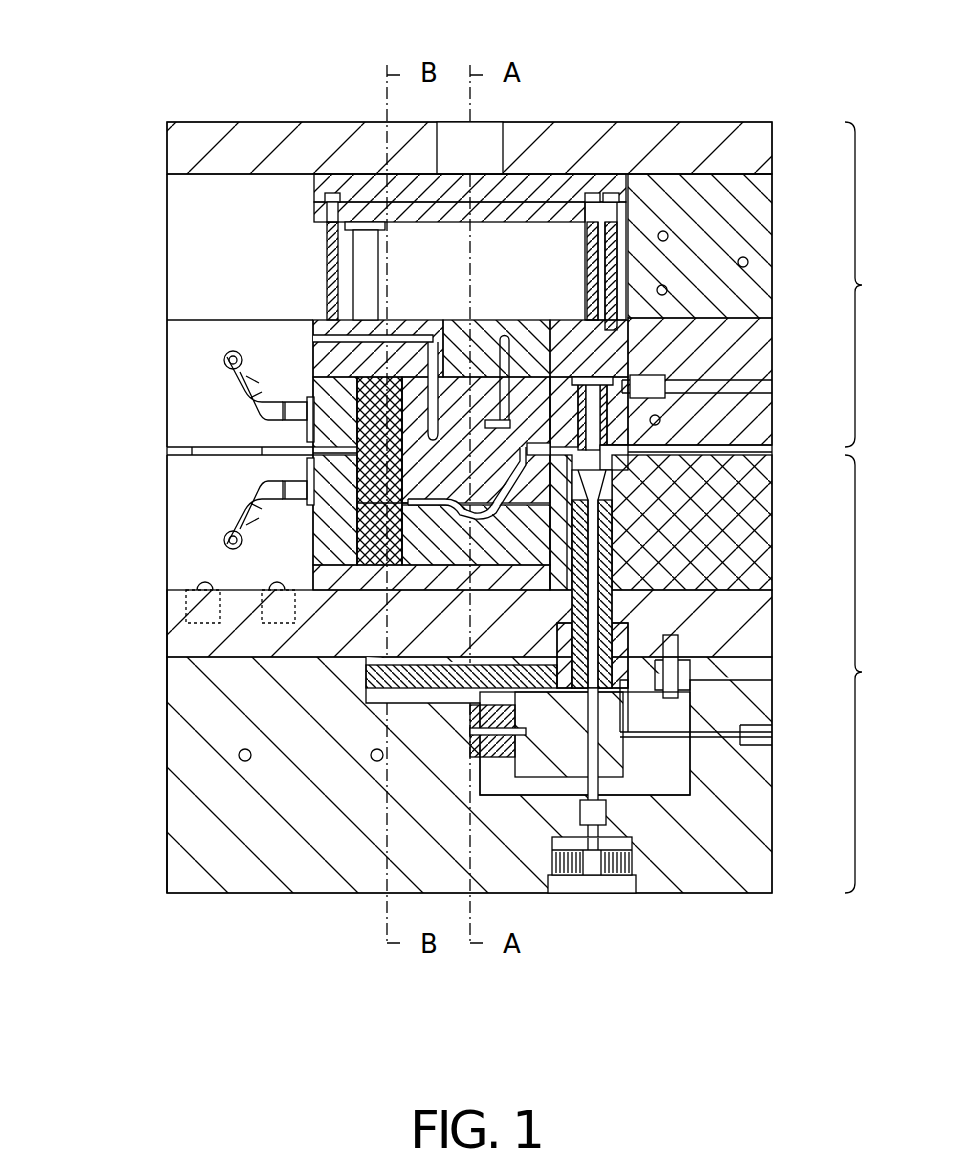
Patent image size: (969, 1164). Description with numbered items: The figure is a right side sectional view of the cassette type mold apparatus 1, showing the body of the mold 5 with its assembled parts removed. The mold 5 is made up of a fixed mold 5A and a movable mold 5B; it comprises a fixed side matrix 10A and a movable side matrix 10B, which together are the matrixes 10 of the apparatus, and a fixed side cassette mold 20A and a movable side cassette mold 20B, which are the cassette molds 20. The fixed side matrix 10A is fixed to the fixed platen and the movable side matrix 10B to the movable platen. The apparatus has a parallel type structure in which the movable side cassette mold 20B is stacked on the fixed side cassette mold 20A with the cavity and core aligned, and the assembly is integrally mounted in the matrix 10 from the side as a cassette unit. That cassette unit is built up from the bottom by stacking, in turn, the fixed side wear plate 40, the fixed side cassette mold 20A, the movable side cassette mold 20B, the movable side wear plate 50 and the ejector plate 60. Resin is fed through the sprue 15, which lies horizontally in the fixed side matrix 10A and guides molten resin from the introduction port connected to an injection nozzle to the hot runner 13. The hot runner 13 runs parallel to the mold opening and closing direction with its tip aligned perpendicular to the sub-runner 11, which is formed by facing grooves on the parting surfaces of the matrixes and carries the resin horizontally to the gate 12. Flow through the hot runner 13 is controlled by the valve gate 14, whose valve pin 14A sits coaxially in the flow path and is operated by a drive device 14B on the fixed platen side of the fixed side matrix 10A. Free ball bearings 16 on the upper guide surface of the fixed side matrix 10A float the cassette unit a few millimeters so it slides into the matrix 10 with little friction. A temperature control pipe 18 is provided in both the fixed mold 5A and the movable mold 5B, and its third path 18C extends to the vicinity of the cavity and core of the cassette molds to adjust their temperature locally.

The cassette type mold apparatus 1 is at (658, 108).
The mold 5 is at (509, 507).
The fixed mold 5A is at (876, 674).
The movable mold 5B is at (876, 284).
The matrix 10 is at (455, 477).
The fixed side matrix 10A is at (178, 738).
The movable side matrix 10B is at (720, 197).
The sub-runner 11 is at (642, 386).
The gate 12 is at (630, 320).
The hot runner 13 is at (617, 450).
The valve gate 14 is at (600, 560).
The valve pin 14A is at (610, 538).
The drive device 14B is at (633, 867).
The sprue 15 is at (734, 733).
The free ball bearing 16 is at (201, 581).
The temperature control pipe 18 is at (414, 379).
The third path 18C is at (417, 367).
The cassette mold 20 is at (345, 436).
The fixed side cassette mold 20A is at (313, 512).
The movable side cassette mold 20B is at (340, 372).
The fixed side wear plate 40 is at (313, 575).
The movable side wear plate 50 is at (313, 330).
The ejector plate 60 is at (531, 182).